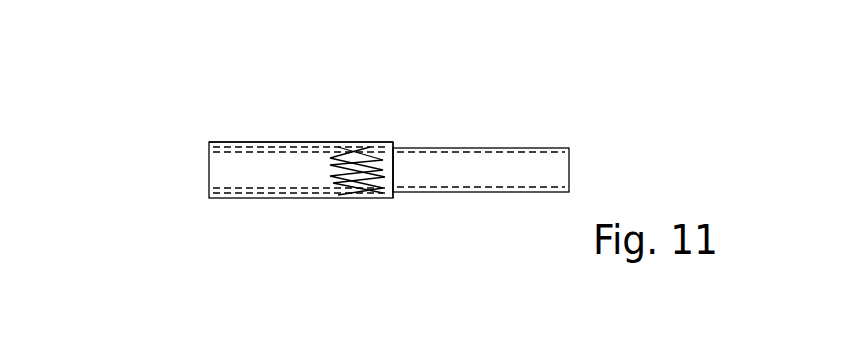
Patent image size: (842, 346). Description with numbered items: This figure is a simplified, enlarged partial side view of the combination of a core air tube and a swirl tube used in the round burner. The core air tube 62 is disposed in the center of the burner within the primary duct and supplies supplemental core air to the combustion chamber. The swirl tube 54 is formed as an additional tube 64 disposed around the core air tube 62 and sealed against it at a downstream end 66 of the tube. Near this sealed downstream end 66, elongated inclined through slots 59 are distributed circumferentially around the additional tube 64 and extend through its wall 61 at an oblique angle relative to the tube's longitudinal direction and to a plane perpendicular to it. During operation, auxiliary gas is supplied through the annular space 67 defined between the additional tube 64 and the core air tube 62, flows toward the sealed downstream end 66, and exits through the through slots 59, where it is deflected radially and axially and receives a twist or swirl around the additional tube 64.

The swirl tube 54 is at (196, 108).
The elongated inclined through slots 59 is at (368, 150).
The wall 61 is at (242, 143).
The core air tube 62 is at (477, 162).
The additional tube 64 is at (273, 176).
The downstream end 66 is at (397, 200).
The annular space 67 is at (208, 157).